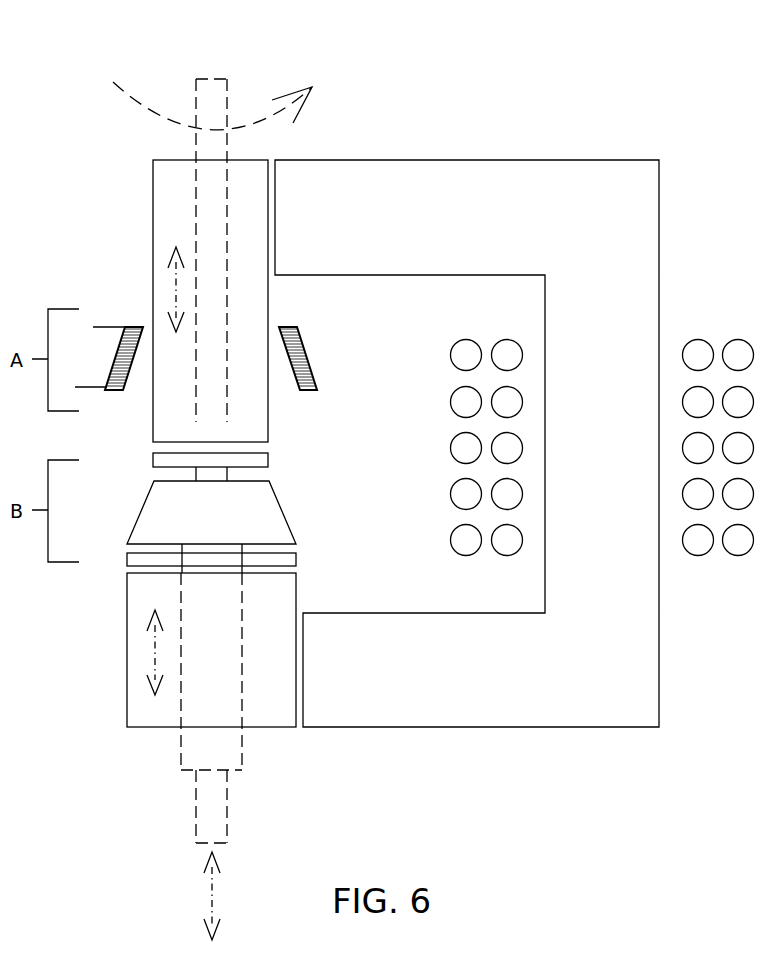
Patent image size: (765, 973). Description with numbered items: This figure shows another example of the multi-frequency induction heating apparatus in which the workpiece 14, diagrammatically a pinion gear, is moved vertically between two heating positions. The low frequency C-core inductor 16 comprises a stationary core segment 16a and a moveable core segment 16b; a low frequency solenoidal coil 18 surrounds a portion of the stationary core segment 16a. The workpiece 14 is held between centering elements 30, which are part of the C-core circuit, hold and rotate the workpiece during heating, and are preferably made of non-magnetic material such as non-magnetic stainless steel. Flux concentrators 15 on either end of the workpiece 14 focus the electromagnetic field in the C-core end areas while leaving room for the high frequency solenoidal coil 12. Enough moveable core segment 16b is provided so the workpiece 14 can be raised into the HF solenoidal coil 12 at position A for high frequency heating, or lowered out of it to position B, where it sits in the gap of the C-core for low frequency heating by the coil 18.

The centering elements 30 is at (210, 98).
The high frequency solenoidal coil 12 is at (122, 360).
The flux concentrators 15 is at (258, 460).
The workpiece 14 is at (221, 521).
The low frequency C-core inductor 16 is at (662, 123).
The stationary core segment 16a is at (568, 703).
The moveable core segment 16b is at (154, 707).
The low frequency solenoidal coil 18 is at (673, 557).